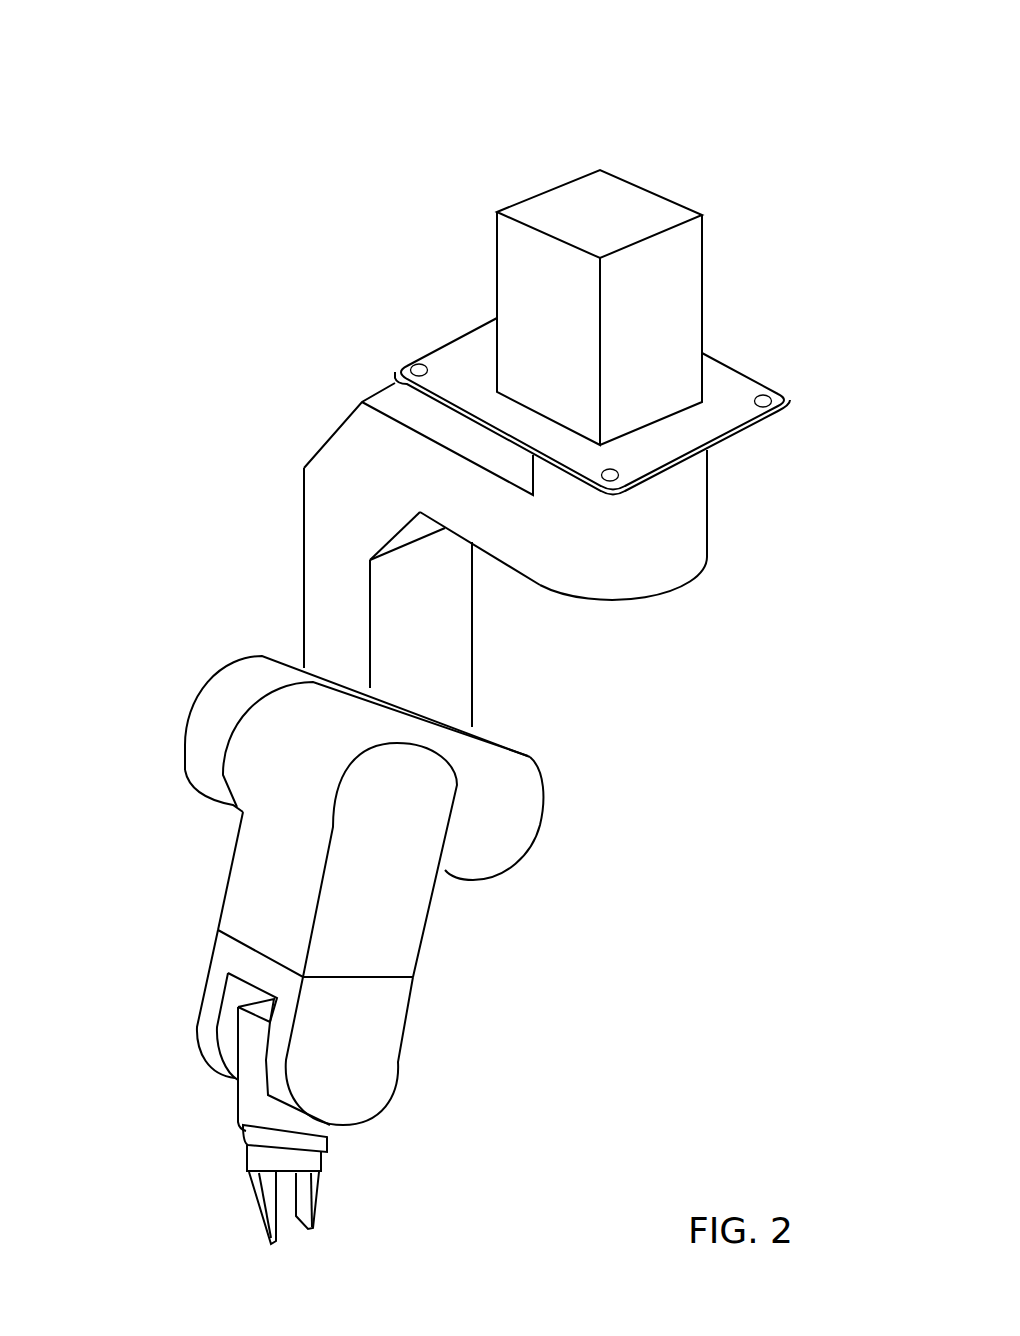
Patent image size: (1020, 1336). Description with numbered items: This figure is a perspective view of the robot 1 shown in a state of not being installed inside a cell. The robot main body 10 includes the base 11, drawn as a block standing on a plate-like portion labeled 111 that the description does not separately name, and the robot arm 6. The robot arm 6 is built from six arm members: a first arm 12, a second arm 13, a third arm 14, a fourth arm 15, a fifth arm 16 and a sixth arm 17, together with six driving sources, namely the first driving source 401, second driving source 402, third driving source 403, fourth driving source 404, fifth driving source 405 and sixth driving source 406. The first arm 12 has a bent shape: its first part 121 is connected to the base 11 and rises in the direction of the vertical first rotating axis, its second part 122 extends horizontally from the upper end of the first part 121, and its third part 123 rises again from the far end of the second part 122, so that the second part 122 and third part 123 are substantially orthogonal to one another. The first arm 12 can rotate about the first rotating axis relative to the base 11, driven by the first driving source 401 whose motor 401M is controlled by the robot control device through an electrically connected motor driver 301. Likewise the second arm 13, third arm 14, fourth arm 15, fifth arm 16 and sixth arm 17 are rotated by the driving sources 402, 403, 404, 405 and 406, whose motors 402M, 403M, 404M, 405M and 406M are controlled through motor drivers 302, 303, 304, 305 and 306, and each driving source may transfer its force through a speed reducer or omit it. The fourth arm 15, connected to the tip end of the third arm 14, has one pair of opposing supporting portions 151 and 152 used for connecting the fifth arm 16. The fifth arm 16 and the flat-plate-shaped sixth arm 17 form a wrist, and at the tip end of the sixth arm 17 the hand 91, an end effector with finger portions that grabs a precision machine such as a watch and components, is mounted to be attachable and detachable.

The robot 1 is at (667, 112).
The robot main body 10 is at (717, 160).
The base 11 is at (704, 284).
The base plate 111 is at (727, 416).
The first part 121 is at (678, 482).
The second part 122 is at (503, 517).
The first arm 12 is at (303, 558).
The third part 123 is at (338, 597).
The robot arm 6 is at (303, 615).
The second arm 13 is at (534, 851).
The third arm 14 is at (231, 852).
The fourth arm 15 is at (212, 957).
The supporting portion 151 is at (208, 1035).
The supporting portion 152 is at (353, 1043).
The fifth arm 16 is at (232, 1105).
The sixth arm 17 is at (242, 1143).
The hand 91 is at (252, 1220).
The motor driver 301 is at (533, 283).
The motor driver 302 is at (257, 225).
The motor driver 303 is at (257, 254).
The motor driver 304 is at (257, 282).
The motor driver 305 is at (257, 309).
The motor driver 306 is at (257, 337).
The motor 401M is at (400, 477).
The first driving source 401 is at (312, 555).
The motor 402M is at (485, 803).
The second driving source 402 is at (463, 780).
The motor 403M is at (398, 812).
The third driving source 403 is at (375, 860).
The motor 404M is at (360, 930).
The fourth driving source 404 is at (347, 1020).
The motor 405M is at (337, 1063).
The fifth driving source 405 is at (428, 1064).
The motor 406M is at (255, 1065).
The sixth driving source 406 is at (326, 1097).